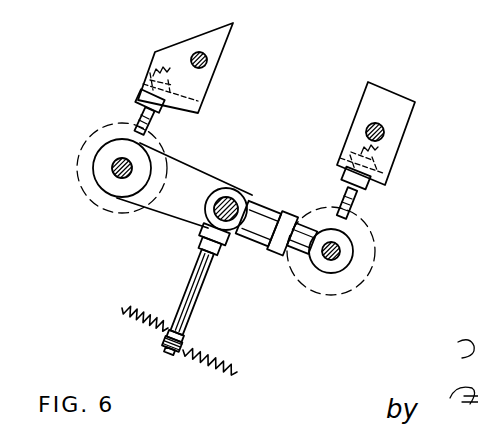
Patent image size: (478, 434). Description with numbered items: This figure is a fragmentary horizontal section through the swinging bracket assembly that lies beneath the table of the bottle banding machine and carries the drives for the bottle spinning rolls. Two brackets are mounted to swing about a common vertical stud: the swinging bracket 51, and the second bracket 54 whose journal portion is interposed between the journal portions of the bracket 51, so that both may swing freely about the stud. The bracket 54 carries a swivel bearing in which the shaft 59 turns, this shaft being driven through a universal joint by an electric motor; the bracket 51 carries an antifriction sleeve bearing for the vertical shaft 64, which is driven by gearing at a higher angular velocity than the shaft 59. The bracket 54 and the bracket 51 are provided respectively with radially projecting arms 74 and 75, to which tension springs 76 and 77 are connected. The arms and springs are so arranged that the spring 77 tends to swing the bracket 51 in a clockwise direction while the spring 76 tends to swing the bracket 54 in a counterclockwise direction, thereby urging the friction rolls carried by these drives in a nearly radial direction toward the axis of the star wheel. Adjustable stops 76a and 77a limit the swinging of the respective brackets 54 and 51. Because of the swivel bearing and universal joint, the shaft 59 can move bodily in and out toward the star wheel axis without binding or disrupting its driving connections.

The swinging bracket 51 is at (203, 167).
The second bracket 54 is at (261, 222).
The shaft 59 is at (341, 252).
The vertical shaft 64 is at (114, 172).
The radially projecting arm 74 is at (174, 359).
The radially projecting arm 75 is at (193, 300).
The tension spring 76 is at (228, 371).
The adjustable stop 76a is at (357, 204).
The tension spring 77 is at (132, 333).
The adjustable stop 77a is at (133, 117).